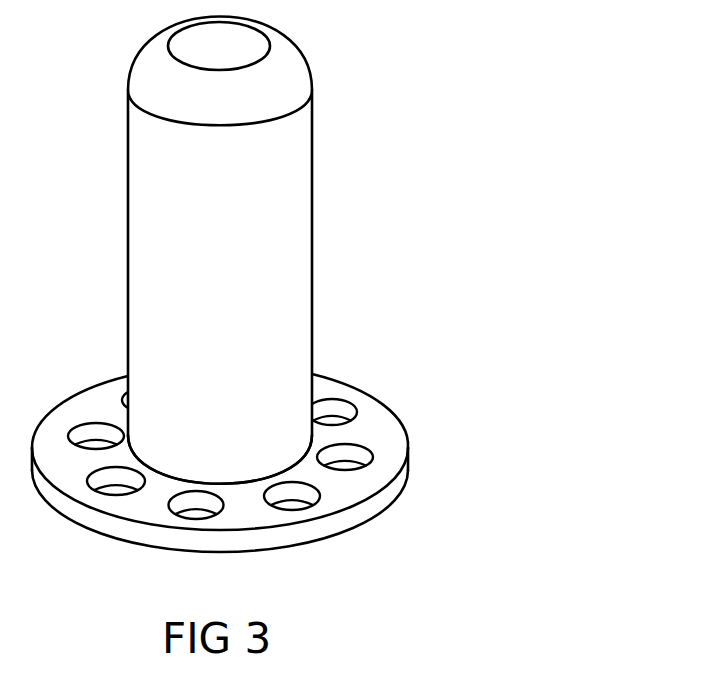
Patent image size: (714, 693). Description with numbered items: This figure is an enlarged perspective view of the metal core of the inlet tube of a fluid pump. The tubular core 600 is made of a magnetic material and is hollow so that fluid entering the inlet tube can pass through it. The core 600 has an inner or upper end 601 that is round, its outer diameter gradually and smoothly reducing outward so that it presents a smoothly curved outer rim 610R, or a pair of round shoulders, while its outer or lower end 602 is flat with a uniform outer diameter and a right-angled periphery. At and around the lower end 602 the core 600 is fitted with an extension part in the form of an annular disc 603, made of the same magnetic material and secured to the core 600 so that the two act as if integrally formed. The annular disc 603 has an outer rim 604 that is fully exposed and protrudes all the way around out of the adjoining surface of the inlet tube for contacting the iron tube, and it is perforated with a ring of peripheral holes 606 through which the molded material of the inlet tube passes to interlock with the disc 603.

The tubular core 600 is at (303, 315).
The inner/upper end 601 is at (278, 137).
The outer/lower end 602 is at (173, 468).
The annular disc 603 is at (385, 400).
The outer rim 604 is at (340, 525).
The peripheral holes 606 is at (358, 457).
The receiving opening 610R is at (277, 75).